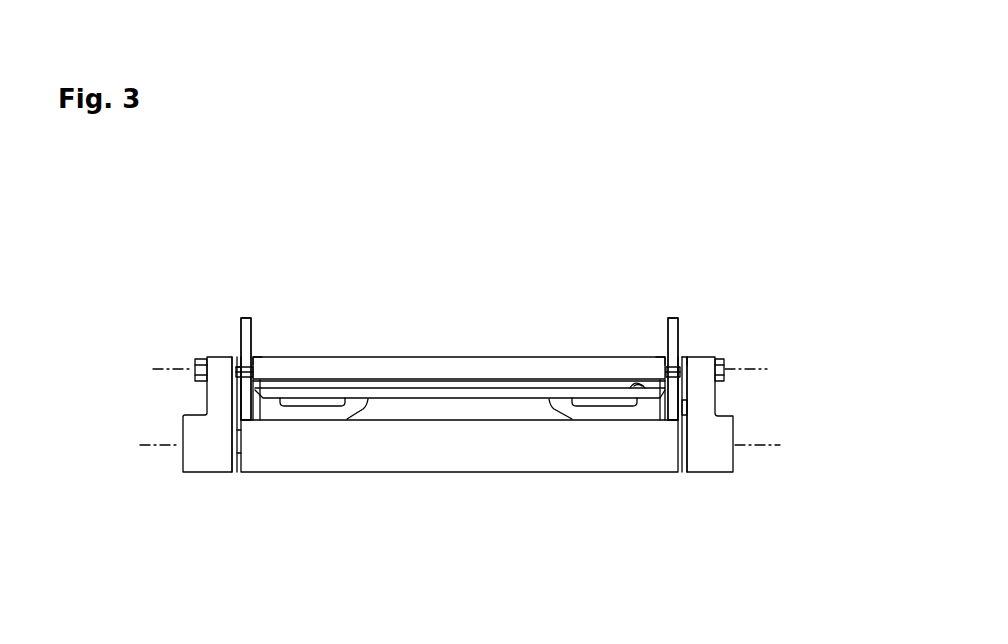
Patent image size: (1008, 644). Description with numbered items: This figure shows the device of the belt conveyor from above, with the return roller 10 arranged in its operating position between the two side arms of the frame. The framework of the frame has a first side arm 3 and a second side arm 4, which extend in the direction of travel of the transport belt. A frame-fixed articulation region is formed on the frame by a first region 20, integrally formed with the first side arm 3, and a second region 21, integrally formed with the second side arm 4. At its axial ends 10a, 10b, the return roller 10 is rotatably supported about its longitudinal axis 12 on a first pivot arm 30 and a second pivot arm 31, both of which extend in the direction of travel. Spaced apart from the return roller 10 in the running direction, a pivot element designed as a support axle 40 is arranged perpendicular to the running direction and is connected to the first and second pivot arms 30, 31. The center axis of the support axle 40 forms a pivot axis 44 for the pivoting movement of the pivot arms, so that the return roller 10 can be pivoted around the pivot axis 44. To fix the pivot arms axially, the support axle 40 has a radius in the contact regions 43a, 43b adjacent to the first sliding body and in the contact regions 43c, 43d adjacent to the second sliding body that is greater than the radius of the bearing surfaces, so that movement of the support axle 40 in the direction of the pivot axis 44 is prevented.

The first side arm 3 is at (247, 340).
The second side arm 4 is at (675, 322).
The return roller 10 is at (445, 450).
The axial end of return roller 10a is at (236, 460).
The axial end of return roller 10b is at (680, 460).
The longitudinal axis 12 is at (757, 445).
The first region 20 is at (241, 347).
The second region 21 is at (673, 340).
The first pivot arm 30 is at (187, 427).
The second pivot arm 31 is at (718, 431).
The support axle 40 is at (457, 368).
The contact region 43a is at (238, 356).
The contact region 43b is at (253, 357).
The contact region 43c is at (666, 357).
The contact region 43d is at (683, 357).
The pivot axis 44 is at (747, 370).